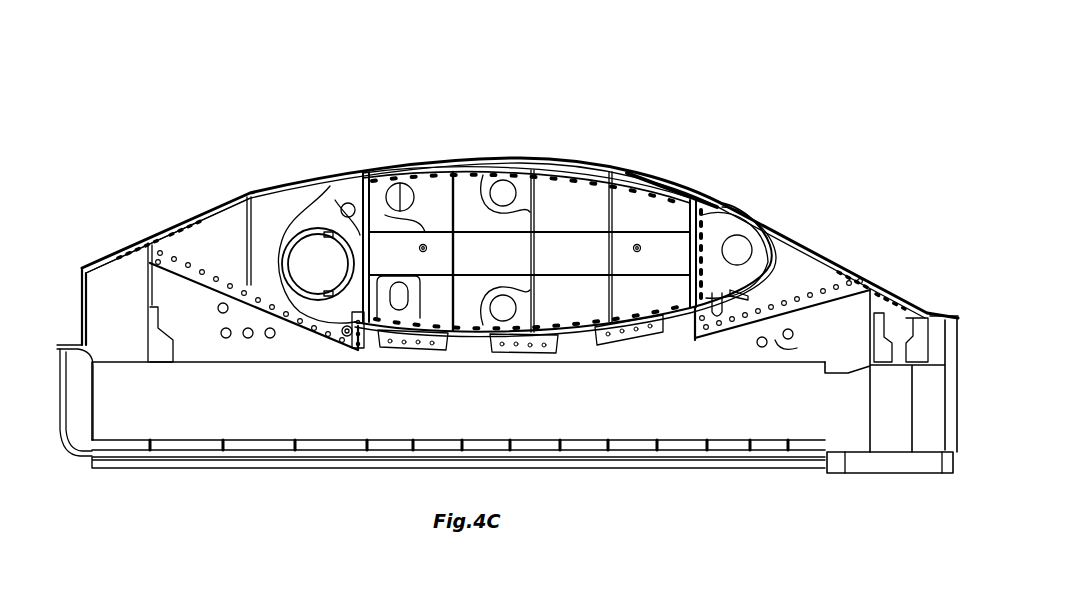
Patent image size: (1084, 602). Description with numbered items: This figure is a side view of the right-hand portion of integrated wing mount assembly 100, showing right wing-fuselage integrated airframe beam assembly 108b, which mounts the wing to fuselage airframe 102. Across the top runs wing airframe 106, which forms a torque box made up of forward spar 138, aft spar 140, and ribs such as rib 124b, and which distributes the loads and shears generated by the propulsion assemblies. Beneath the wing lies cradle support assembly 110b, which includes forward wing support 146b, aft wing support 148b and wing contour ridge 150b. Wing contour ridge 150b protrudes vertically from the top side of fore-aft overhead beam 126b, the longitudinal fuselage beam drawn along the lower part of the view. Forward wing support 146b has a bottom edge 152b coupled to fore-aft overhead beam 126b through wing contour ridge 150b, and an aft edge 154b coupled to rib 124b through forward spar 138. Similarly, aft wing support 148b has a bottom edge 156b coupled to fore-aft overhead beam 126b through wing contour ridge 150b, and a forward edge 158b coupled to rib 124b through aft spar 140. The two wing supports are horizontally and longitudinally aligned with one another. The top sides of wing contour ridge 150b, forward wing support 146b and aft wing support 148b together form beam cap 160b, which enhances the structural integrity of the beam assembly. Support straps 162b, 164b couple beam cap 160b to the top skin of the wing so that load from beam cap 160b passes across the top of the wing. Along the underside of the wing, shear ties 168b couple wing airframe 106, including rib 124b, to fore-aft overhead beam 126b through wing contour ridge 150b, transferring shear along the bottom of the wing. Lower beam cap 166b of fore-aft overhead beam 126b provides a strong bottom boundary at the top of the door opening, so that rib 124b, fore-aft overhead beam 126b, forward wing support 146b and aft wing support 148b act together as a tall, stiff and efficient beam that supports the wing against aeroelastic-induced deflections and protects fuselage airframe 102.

The integrated wing mount assembly 100 is at (264, 98).
The fuselage airframe 102 is at (110, 470).
The wing airframe 106 is at (480, 160).
The right wing-fuselage integrated airframe beam assembly 108b is at (82, 256).
The cradle support assembly 110b is at (832, 263).
The rib 124b is at (555, 195).
The fore-aft overhead beam 126b is at (890, 440).
The forward spar 138 is at (668, 208).
The aft spar 140 is at (435, 184).
The forward wing support 146b is at (783, 260).
The aft wing support 148b is at (252, 207).
The wing contour ridge 150b is at (115, 282).
The bottom edge 152b is at (790, 332).
The aft edge 154b is at (722, 207).
The bottom edge 156b is at (210, 292).
The forward edge 158b is at (335, 200).
The beam cap 160b is at (200, 215).
The support strap 162b is at (683, 192).
The support strap 164b is at (380, 168).
The lower beam cap 166b is at (180, 452).
The shear tie 168b is at (403, 350).